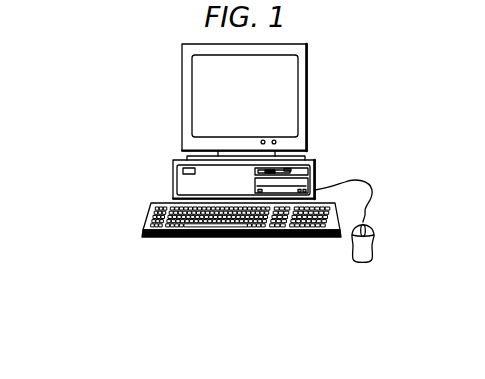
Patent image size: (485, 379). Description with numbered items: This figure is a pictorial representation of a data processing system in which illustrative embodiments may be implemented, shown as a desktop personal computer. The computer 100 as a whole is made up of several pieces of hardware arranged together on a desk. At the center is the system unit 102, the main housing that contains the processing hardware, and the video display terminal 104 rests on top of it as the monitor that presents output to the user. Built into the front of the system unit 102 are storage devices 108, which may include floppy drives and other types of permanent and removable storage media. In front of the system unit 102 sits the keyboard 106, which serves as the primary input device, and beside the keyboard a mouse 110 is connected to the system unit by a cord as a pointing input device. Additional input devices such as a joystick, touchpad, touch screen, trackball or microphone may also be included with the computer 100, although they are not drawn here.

The computer 100 is at (106, 95).
The system unit 102 is at (173, 178).
The video display terminal 104 is at (307, 100).
The keyboard 106 is at (196, 238).
The storage devices 108 is at (317, 174).
The mouse 110 is at (363, 263).